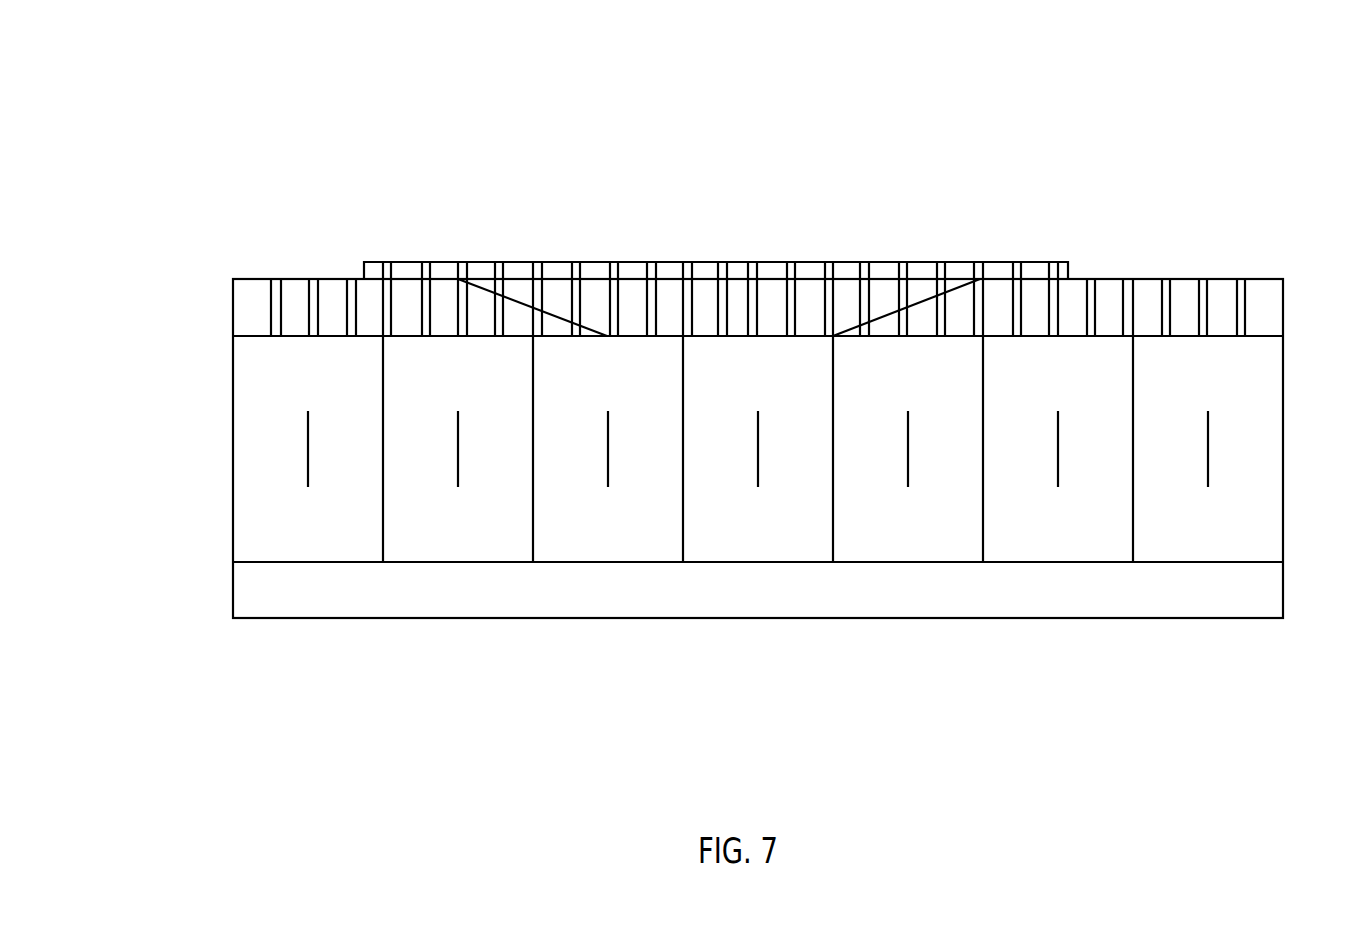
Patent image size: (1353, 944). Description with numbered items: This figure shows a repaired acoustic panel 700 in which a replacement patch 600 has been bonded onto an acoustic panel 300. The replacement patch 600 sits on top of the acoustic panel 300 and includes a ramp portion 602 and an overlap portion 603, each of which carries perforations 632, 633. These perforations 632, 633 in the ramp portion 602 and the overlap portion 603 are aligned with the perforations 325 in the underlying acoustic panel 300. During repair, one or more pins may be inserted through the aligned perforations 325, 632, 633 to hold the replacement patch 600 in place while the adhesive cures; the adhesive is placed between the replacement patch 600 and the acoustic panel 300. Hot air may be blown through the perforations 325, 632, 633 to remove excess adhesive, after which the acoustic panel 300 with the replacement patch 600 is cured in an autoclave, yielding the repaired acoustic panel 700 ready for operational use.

The repaired acoustic panel 700 is at (1196, 116).
The acoustic panel 300 is at (232, 382).
The replacement patch 600 is at (805, 262).
The ramp portion 602 is at (515, 219).
The overlap portion 603 is at (409, 218).
The perforation 632 is at (543, 290).
The perforation 633 is at (381, 263).
The perforation 325 is at (495, 307).